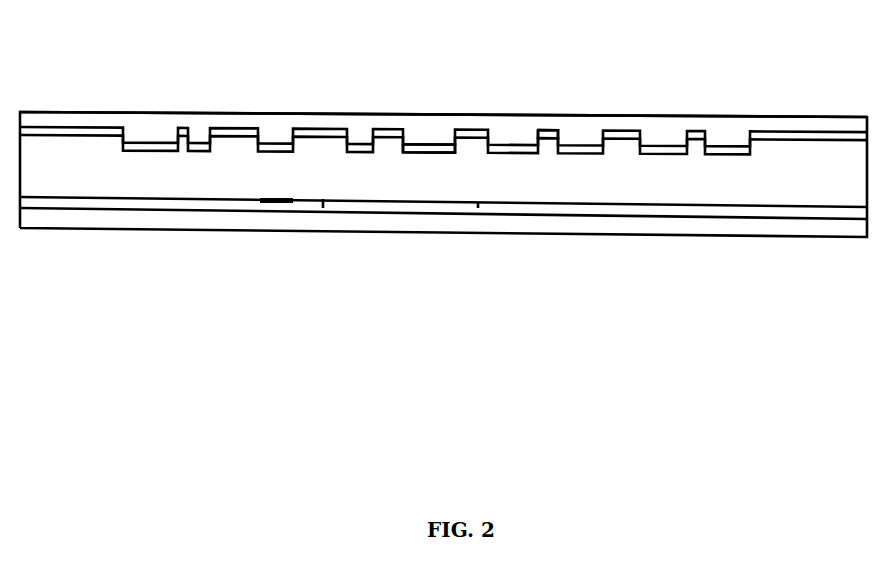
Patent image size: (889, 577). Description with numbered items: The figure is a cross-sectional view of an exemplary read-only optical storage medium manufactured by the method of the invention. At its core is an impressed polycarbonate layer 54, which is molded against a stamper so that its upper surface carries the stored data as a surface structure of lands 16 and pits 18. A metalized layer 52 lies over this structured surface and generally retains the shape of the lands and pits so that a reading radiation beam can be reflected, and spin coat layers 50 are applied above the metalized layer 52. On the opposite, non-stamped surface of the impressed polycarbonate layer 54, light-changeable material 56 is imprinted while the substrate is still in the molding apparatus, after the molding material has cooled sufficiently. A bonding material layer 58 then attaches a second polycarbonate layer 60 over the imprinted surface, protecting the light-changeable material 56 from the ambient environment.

The lands 16 is at (550, 138).
The pits 18 is at (435, 143).
The spin coat layers 50 is at (657, 128).
The metalized layer 52 is at (800, 135).
The impressed polycarbonate layer 54 is at (770, 175).
The light-changeable material 56 is at (282, 210).
The bonding material layer 58 is at (710, 207).
The second polycarbonate layer 60 is at (623, 214).